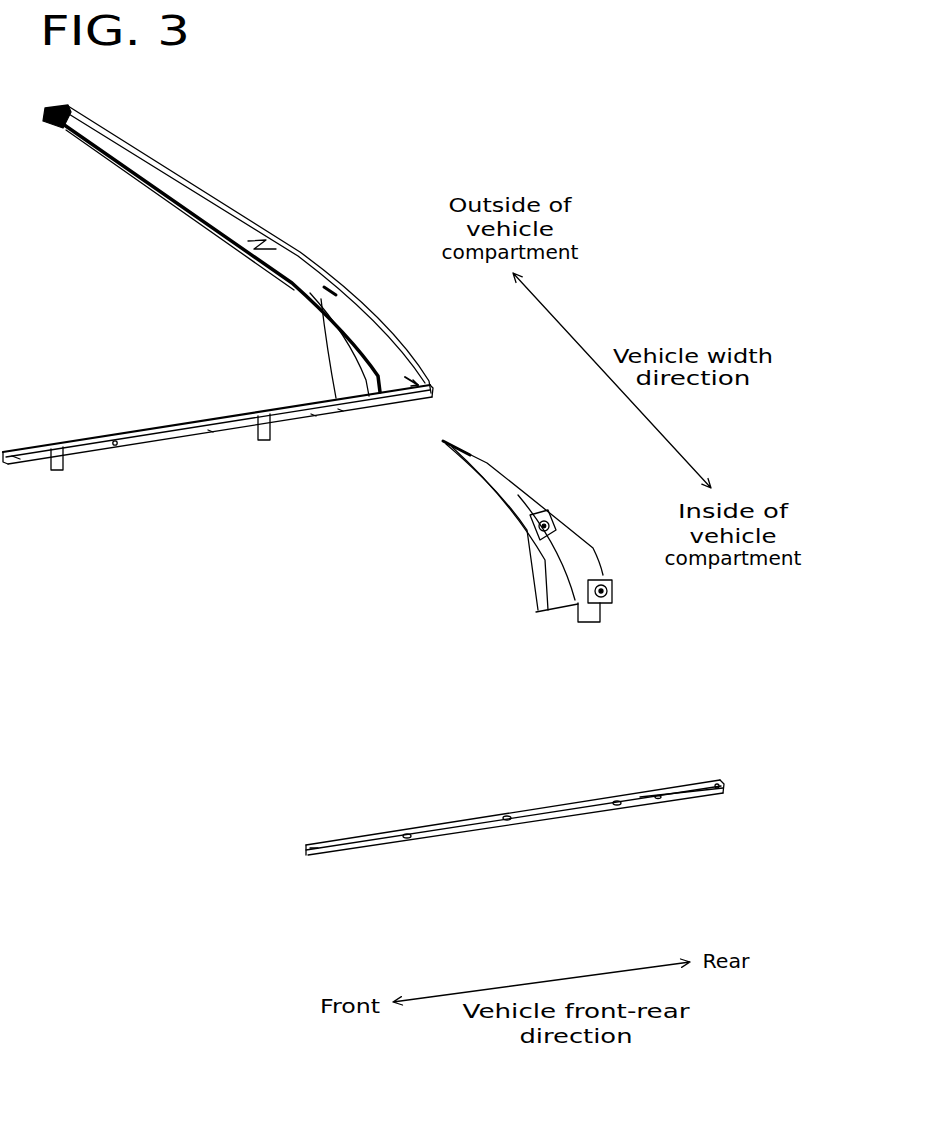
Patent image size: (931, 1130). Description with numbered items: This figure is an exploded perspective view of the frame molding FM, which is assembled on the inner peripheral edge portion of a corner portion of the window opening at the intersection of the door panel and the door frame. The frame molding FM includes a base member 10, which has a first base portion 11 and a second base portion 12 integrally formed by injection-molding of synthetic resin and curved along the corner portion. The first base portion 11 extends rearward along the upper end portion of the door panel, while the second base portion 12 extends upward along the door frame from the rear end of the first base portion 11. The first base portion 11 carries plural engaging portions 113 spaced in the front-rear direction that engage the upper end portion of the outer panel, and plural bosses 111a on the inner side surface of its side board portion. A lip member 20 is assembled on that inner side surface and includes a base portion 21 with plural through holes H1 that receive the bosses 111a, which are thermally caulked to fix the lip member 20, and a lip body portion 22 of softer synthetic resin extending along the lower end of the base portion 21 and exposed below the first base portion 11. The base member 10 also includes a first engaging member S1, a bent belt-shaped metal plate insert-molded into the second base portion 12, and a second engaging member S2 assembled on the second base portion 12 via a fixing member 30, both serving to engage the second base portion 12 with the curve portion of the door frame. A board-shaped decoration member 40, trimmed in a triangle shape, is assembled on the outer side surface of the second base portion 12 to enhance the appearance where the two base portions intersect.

The base member 10 is at (207, 174).
The second base portion 12 is at (279, 254).
The first engaging member S1 is at (213, 222).
The frame molding FM is at (367, 171).
The decoration member 40 is at (352, 372).
The first base portion 11 is at (311, 422).
The engaging portion 113 is at (58, 472).
The boss 111a is at (116, 447).
The fixing member 30 is at (576, 535).
The second engaging member S2 is at (530, 565).
The lip member 20 is at (525, 853).
The base portion 21 is at (622, 795).
The through hole H1 is at (615, 812).
The lip body portion 22 is at (684, 808).